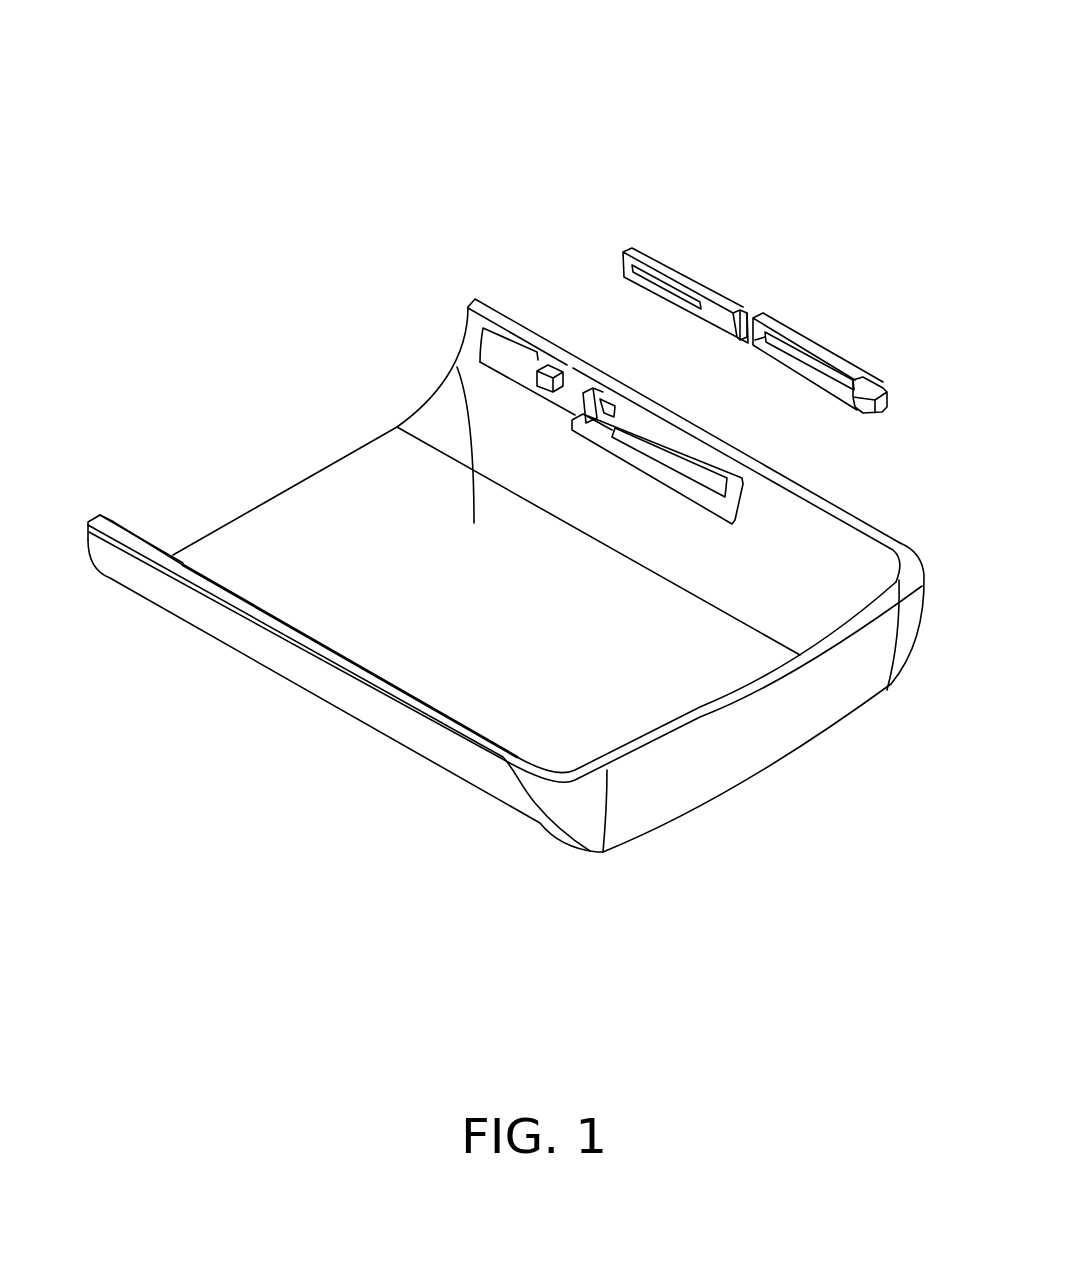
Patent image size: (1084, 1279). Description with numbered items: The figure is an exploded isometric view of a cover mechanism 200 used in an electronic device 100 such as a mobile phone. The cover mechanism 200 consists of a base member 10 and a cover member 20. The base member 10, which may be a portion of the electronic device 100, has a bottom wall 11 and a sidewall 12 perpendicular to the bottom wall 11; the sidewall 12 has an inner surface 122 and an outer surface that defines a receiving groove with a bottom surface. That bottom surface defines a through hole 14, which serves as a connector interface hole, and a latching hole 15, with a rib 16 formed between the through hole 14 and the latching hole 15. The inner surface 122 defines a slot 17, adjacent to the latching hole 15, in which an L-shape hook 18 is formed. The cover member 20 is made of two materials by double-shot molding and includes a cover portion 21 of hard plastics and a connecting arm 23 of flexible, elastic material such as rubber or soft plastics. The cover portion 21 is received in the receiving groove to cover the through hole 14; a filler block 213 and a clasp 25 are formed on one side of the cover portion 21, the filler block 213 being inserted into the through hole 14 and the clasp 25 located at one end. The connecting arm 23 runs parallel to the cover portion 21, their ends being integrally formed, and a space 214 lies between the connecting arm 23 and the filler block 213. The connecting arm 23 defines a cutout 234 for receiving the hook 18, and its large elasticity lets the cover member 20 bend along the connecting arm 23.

The electronic device 100 is at (328, 85).
The cover mechanism 200 is at (352, 188).
The base member 10 is at (398, 241).
The cover member 20 is at (588, 240).
The bottom wall 11 is at (457, 367).
The sidewall 12 is at (487, 300).
The inner surface 122 is at (822, 547).
The through hole 14 is at (712, 473).
The latching hole 15 is at (588, 405).
The rib 16 is at (596, 408).
The slot 17 is at (495, 342).
The L-shape hook 18 is at (546, 376).
The cover portion 21 is at (768, 315).
The filler block 213 is at (800, 360).
The space 214 is at (752, 327).
The connecting arm 23 is at (632, 247).
The cutout 234 is at (660, 282).
The clasp 25 is at (865, 390).